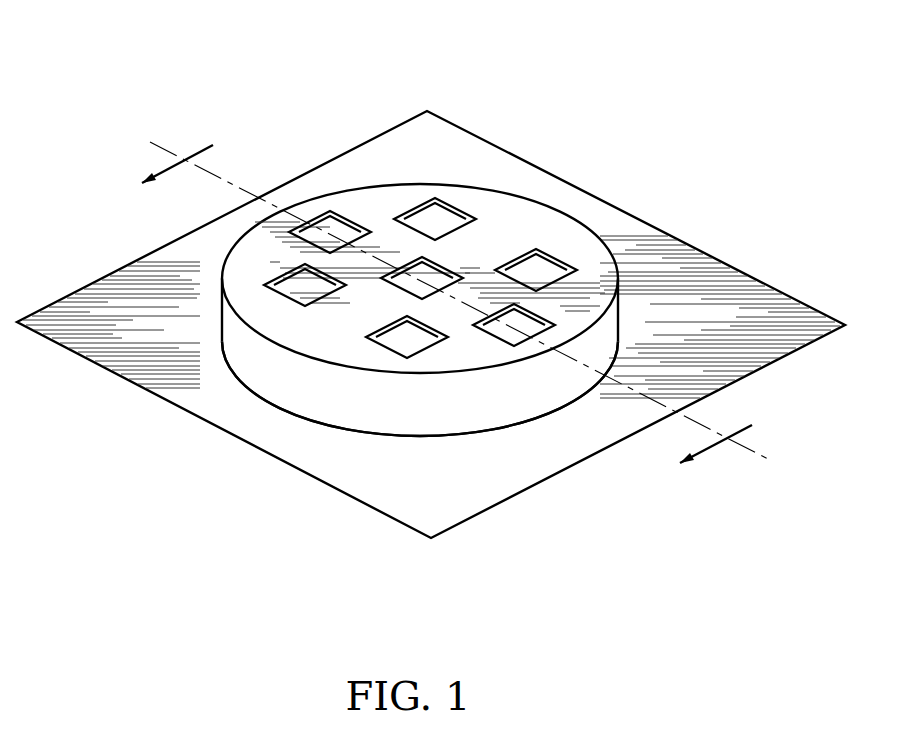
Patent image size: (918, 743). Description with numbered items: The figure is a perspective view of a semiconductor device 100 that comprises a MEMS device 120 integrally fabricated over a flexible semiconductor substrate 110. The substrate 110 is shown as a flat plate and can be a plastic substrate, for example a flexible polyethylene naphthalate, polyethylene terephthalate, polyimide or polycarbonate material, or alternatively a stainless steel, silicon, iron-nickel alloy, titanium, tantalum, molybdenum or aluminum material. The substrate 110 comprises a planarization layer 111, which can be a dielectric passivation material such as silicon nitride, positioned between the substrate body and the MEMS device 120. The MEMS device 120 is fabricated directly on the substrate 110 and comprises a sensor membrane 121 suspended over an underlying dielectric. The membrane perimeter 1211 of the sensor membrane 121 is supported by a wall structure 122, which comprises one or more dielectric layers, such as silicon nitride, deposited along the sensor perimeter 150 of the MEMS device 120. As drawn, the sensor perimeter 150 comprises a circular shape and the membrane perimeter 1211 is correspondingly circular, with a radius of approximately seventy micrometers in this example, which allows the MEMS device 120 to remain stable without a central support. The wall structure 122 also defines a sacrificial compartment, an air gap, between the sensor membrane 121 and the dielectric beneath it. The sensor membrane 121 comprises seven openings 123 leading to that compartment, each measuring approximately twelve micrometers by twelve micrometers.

The semiconductor device 100 is at (260, 117).
The flexible semiconductor substrate 110 is at (585, 440).
The planarization layer 111 is at (758, 315).
The MEMS device 120 is at (565, 233).
The sensor membrane 121 is at (373, 218).
The membrane perimeter 1211 is at (432, 183).
The wall structure 122 is at (283, 380).
The openings 123 is at (460, 213).
The sensor perimeter 150 is at (470, 445).